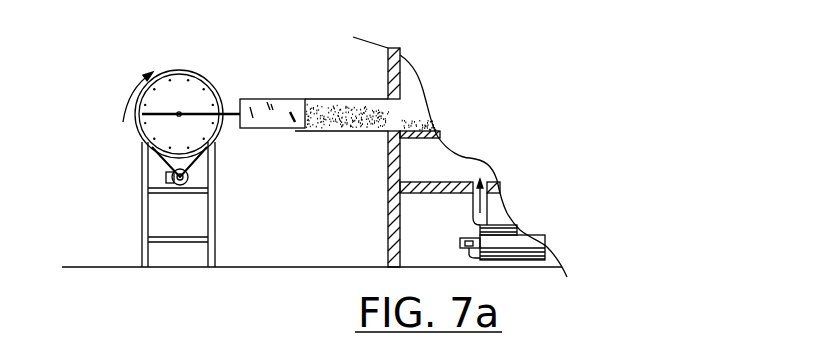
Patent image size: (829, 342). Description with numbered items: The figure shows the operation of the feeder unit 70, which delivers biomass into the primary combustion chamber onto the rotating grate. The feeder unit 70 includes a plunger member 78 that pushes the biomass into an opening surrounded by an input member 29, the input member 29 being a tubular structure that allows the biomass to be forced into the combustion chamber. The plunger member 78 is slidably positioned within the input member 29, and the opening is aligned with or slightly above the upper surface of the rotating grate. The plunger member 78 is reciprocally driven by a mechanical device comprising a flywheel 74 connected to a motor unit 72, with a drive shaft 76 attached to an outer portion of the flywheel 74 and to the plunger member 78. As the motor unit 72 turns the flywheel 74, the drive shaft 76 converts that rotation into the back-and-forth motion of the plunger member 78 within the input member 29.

The feeder unit 70 is at (310, 94).
The motor unit 72 is at (174, 181).
The flywheel 74 is at (157, 125).
The drive shaft 76 is at (245, 102).
The plunger member 78 is at (267, 130).
The input member 29 is at (353, 131).